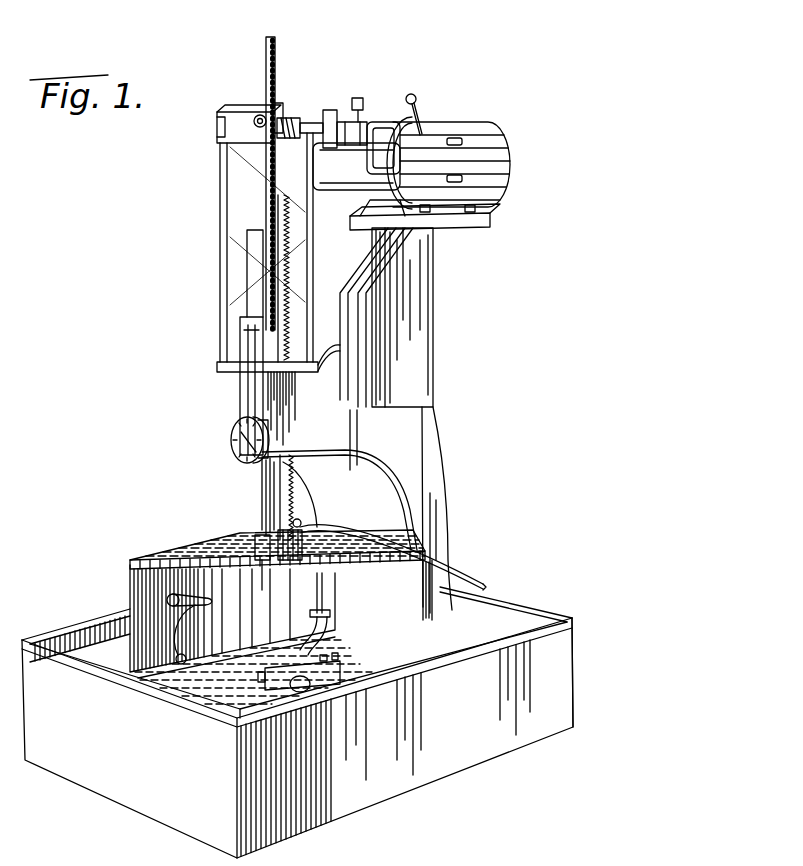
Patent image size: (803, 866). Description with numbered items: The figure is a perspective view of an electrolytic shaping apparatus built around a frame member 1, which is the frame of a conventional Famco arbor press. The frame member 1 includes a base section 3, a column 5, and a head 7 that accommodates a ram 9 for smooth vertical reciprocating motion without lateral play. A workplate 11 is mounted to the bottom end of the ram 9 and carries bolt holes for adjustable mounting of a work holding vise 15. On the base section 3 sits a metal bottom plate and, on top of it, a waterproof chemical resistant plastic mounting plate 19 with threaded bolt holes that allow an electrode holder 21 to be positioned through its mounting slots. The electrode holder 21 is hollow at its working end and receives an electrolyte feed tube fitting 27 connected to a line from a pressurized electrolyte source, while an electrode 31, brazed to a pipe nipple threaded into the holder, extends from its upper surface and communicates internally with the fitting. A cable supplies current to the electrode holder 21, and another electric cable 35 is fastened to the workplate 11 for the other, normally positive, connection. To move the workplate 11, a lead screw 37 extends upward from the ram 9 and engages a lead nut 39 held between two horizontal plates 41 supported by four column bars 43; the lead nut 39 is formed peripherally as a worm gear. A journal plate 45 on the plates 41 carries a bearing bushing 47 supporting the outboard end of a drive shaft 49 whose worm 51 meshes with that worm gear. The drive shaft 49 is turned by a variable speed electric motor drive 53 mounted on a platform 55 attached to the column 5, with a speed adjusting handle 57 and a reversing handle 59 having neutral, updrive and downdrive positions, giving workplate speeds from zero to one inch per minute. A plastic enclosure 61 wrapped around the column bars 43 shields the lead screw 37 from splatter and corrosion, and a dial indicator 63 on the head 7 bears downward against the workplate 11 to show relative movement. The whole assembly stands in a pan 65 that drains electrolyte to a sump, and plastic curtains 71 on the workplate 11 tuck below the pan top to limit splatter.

The frame member 1 is at (440, 470).
The base section 3 is at (580, 652).
The column 5 is at (432, 497).
The head 7 is at (240, 397).
The ram 9 is at (281, 486).
The workplate 11 is at (300, 582).
The work holding vise 15 is at (170, 619).
The plastic mounting plate 19 is at (165, 673).
The electrode holder 21 is at (278, 690).
The electrolyte feed tube fitting 27 is at (328, 691).
The electrode 31 is at (320, 610).
The electric cable 35 is at (298, 526).
The lead screw 37 is at (280, 203).
The lead nut 39 is at (305, 122).
The horizontal plates 41 is at (295, 118).
The column bars 43 is at (320, 238).
The journal plate 45 is at (240, 114).
The bearing bushing 47 is at (263, 110).
The drive shaft 49 is at (330, 120).
The worm 51 is at (300, 163).
The variable speed electric motor drive 53 is at (418, 140).
The platform 55 is at (497, 220).
The speed adjusting handle 57 is at (364, 98).
The reversing handle 59 is at (410, 93).
The plastic enclosure 61 is at (300, 255).
The dial indicator 63 is at (234, 440).
The pan 65 is at (445, 758).
The plastic curtains 71 is at (130, 591).